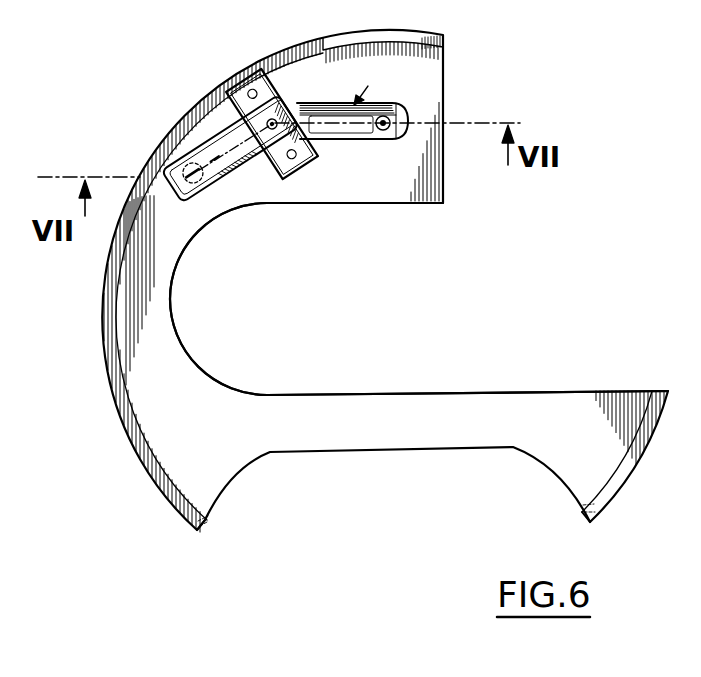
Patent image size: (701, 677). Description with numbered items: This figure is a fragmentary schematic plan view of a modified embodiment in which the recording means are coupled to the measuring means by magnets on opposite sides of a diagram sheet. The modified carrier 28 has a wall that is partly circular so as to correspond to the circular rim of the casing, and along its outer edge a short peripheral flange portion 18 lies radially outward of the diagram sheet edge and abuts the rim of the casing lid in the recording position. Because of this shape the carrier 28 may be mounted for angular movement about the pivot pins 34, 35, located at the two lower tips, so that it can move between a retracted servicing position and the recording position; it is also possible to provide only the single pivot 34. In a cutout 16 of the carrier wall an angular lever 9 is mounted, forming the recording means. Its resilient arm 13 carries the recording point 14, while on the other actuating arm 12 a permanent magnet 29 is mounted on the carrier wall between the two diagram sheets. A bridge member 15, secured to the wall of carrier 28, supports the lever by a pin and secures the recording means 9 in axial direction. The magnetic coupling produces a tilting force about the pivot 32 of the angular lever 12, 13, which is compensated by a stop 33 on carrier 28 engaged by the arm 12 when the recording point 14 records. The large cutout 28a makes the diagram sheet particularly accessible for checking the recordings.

The angular lever 9 is at (364, 85).
The actuating arm 12 is at (244, 170).
The resilient arm 13 is at (331, 135).
The recording point 14 is at (386, 130).
The bridge member 15 is at (259, 103).
The cutout 16 is at (404, 112).
The peripheral flange portion 18 is at (363, 45).
The modified carrier 28 is at (455, 391).
The large cutout 28a is at (283, 286).
The permanent magnet 29 is at (193, 199).
The pivot 32 is at (288, 97).
The stop 33 is at (200, 142).
The pivot pin 34 is at (205, 523).
The pivot pin 35 is at (597, 510).